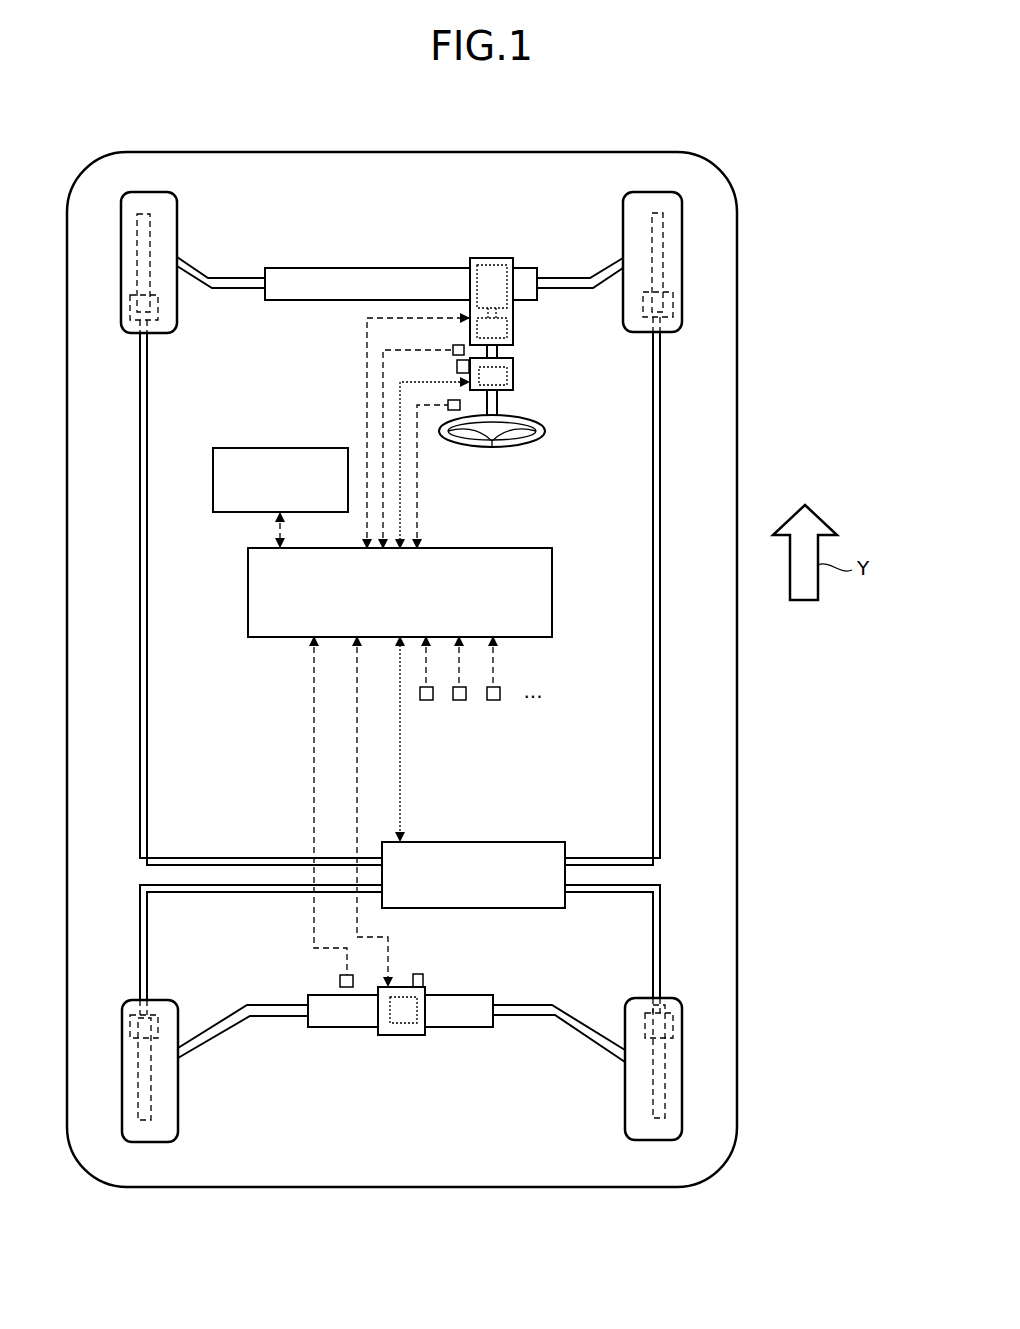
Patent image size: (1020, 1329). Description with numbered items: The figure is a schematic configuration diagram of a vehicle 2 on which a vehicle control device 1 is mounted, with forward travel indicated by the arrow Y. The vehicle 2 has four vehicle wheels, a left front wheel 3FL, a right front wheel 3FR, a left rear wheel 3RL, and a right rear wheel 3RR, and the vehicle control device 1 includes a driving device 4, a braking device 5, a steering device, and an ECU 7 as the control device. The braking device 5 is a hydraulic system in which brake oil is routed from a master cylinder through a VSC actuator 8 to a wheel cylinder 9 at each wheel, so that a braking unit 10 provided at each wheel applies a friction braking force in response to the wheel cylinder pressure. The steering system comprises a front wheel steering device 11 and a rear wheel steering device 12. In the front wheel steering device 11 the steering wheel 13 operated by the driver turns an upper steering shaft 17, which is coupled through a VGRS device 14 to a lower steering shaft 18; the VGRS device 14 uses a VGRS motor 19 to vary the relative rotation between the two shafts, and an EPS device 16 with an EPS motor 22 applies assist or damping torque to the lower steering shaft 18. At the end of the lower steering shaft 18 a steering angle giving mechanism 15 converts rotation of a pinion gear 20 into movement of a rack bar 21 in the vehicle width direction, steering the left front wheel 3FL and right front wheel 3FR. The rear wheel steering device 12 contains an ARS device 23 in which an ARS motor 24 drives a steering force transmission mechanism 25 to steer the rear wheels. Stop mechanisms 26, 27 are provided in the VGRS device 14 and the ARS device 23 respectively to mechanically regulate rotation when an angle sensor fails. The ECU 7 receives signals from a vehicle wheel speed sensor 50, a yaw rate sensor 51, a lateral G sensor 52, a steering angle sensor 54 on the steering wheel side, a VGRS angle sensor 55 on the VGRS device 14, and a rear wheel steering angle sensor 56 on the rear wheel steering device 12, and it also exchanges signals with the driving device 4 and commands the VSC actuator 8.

The vehicle control device 1 is at (878, 212).
The vehicle 2 is at (565, 152).
The left front wheel 3FL is at (182, 234).
The right front wheel 3FR is at (620, 232).
The left rear wheel 3RL is at (182, 1094).
The right rear wheel 3RR is at (621, 1091).
The driving device 4 is at (213, 478).
The braking device 5 is at (675, 767).
The ECU 7 is at (552, 590).
The VSC actuator 8 is at (515, 842).
The wheel cylinder 9 is at (155, 320).
The braking unit 10 is at (432, 668).
The front wheel steering device 11 is at (512, 435).
The rear wheel steering device 12 is at (401, 1025).
The steering wheel 13 is at (545, 432).
The VGRS device 14 is at (544, 380).
The steering angle giving mechanism 15 is at (400, 254).
The EPS device 16 is at (496, 275).
The upper steering shaft 17 is at (497, 405).
The lower steering shaft 18 is at (497, 350).
The VGRS motor 19 is at (507, 378).
The pinion gear 20 is at (480, 262).
The rack bar 21 is at (385, 282).
The EPS motor 22 is at (507, 328).
The ARS device 23 is at (400, 1064).
The ARS motor 24 is at (405, 1023).
The steering force transmission mechanism 25 is at (388, 1035).
The stop mechanism 26 is at (457, 366).
The stop mechanism 27 is at (423, 980).
The vehicle wheel speed sensor 50 is at (426, 700).
The yaw rate sensor 51 is at (459, 700).
The lateral G sensor 52 is at (493, 700).
The steering angle sensor 54 is at (448, 405).
The VGRS angle sensor 55 is at (453, 350).
The rear wheel steering angle sensor 56 is at (347, 987).